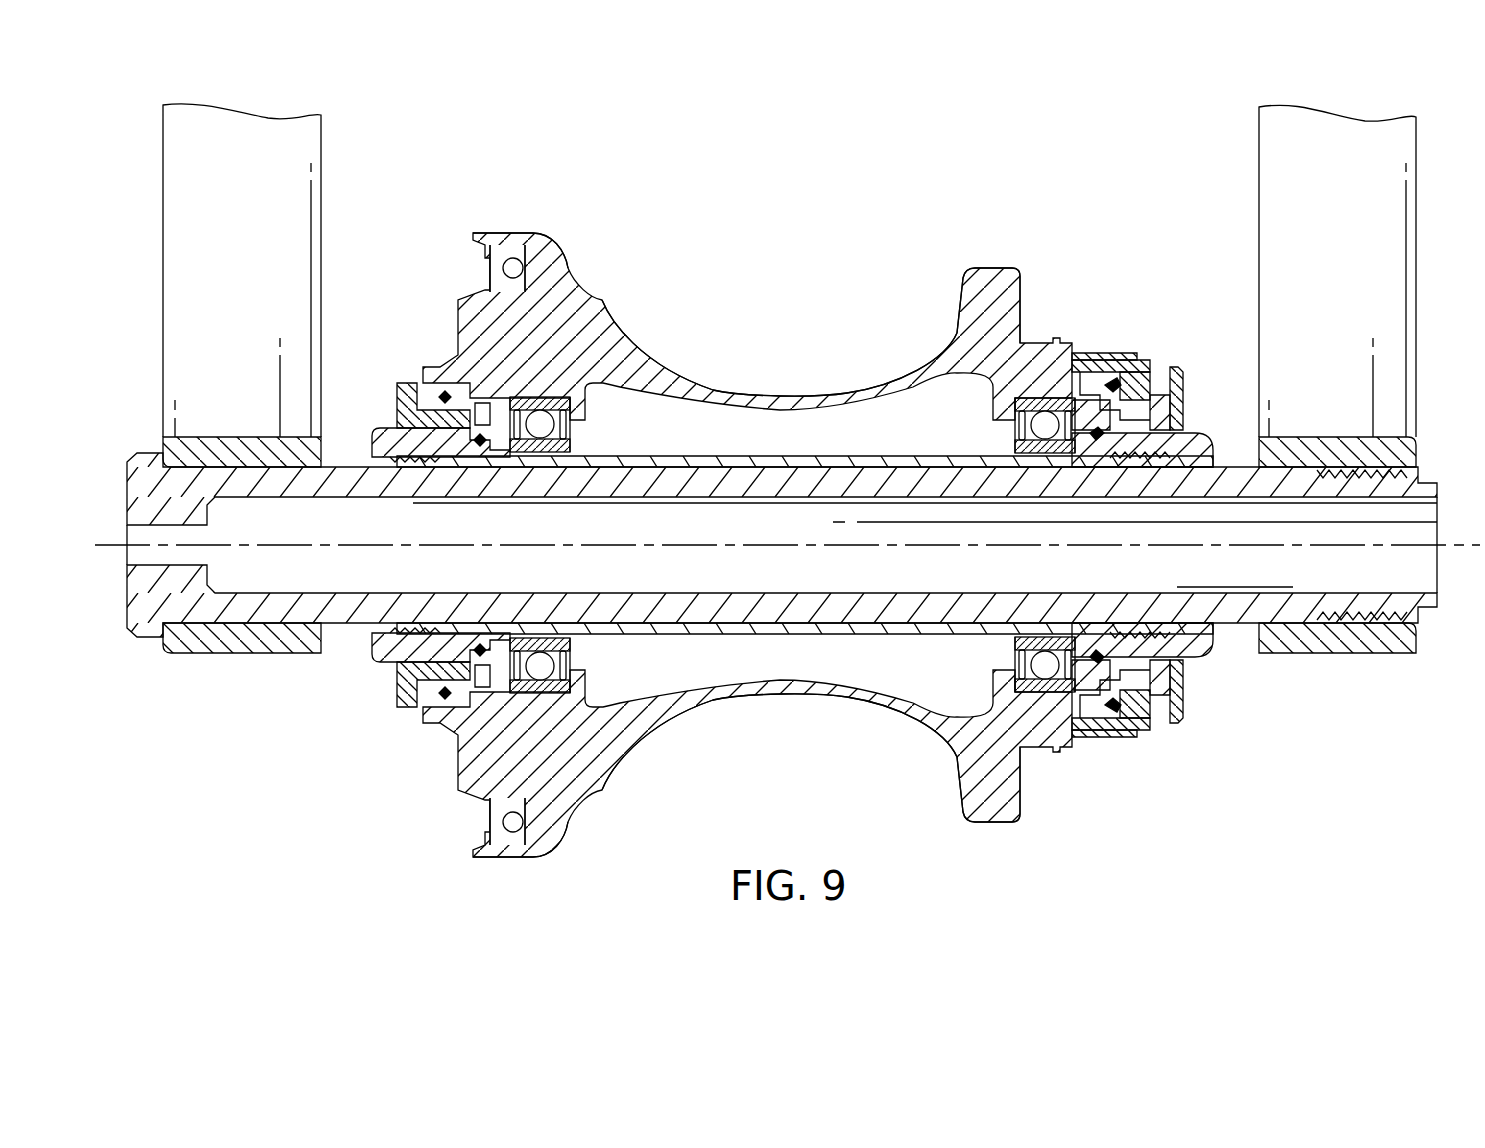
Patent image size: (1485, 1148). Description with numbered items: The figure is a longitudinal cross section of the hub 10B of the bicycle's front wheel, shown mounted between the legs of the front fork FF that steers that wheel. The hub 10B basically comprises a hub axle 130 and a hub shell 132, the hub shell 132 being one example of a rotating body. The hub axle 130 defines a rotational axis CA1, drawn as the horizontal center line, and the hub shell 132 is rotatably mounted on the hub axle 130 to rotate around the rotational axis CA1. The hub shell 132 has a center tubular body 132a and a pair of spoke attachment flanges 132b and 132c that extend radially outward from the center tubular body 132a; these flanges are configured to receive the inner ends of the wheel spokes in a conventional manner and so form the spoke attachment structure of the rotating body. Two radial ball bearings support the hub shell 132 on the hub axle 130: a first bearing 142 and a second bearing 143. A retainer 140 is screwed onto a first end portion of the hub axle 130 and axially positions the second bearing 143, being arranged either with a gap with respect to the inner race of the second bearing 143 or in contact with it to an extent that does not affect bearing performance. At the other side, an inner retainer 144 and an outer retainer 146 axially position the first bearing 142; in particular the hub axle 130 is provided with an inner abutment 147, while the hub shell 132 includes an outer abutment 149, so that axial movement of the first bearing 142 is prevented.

The hub 10B is at (978, 152).
The hub axle 130 is at (820, 637).
The hub shell 132 is at (606, 298).
The center tubular body 132a is at (820, 393).
The spoke attachment flange 132b is at (494, 232).
The spoke attachment flange 132c is at (998, 268).
The retainer 140 is at (375, 423).
The first bearing 142 is at (986, 431).
The second bearing 143 is at (582, 431).
The inner retainer 144 is at (1200, 432).
The outer retainer 146 is at (1087, 363).
The inner abutment 147 is at (1043, 640).
The outer abutment 149 is at (1012, 661).
The front fork FF is at (322, 205).
The rotational axis CA1 is at (332, 550).